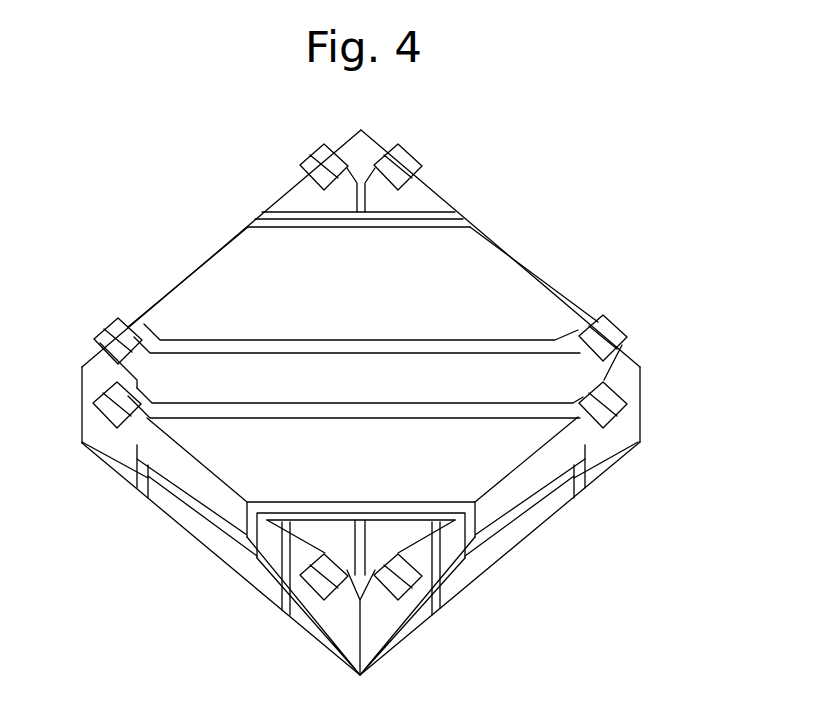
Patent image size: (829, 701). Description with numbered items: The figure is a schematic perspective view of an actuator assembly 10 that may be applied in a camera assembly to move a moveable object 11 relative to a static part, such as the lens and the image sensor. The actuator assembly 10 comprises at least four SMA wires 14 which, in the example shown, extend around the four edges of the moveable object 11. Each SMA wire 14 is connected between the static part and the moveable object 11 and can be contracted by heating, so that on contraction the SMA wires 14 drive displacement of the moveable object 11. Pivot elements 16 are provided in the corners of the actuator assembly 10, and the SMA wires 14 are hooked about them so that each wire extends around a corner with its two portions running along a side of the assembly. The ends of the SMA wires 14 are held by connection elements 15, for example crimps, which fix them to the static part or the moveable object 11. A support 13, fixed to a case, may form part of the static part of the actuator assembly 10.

The actuator assembly 10 is at (152, 218).
The moveable object 11 is at (452, 270).
The support 13 is at (462, 590).
The SMA wires 14 is at (421, 163).
The connection elements 15 is at (607, 322).
The pivot elements 16 is at (638, 442).